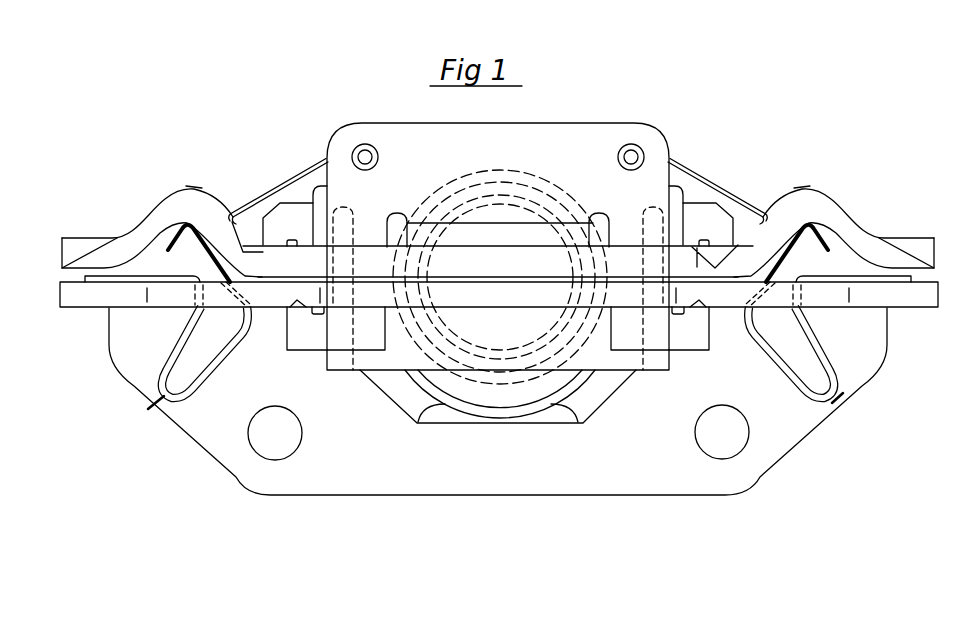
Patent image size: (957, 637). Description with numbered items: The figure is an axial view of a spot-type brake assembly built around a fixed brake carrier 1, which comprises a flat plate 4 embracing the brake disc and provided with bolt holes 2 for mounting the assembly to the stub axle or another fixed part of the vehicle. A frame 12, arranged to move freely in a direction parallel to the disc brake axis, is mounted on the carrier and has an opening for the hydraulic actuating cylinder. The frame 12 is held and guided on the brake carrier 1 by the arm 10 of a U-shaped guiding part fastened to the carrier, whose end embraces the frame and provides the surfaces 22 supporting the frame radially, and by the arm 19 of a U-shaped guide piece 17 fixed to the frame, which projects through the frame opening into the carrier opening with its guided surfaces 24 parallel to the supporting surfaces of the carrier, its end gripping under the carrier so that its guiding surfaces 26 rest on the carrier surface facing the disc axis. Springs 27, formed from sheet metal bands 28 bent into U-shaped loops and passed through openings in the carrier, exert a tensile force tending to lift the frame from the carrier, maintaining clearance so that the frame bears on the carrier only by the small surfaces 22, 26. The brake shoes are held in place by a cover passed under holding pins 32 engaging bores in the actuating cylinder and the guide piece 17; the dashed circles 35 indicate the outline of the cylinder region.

The brake carrier 1 is at (368, 477).
The bolt holes 2 is at (263, 443).
The flat plate 4 is at (100, 297).
The arm 10 is at (288, 215).
The frame 12 is at (287, 259).
The guide piece 17 is at (467, 142).
The arm 19 is at (372, 340).
The surfaces 22 is at (223, 197).
The guided surfaces 24 is at (315, 203).
The guiding surfaces 26 is at (288, 313).
The springs 27 is at (855, 399).
The sheet metal bands 28 is at (182, 333).
The holding pins 32 is at (362, 144).
The cylinder outline 35 is at (448, 278).